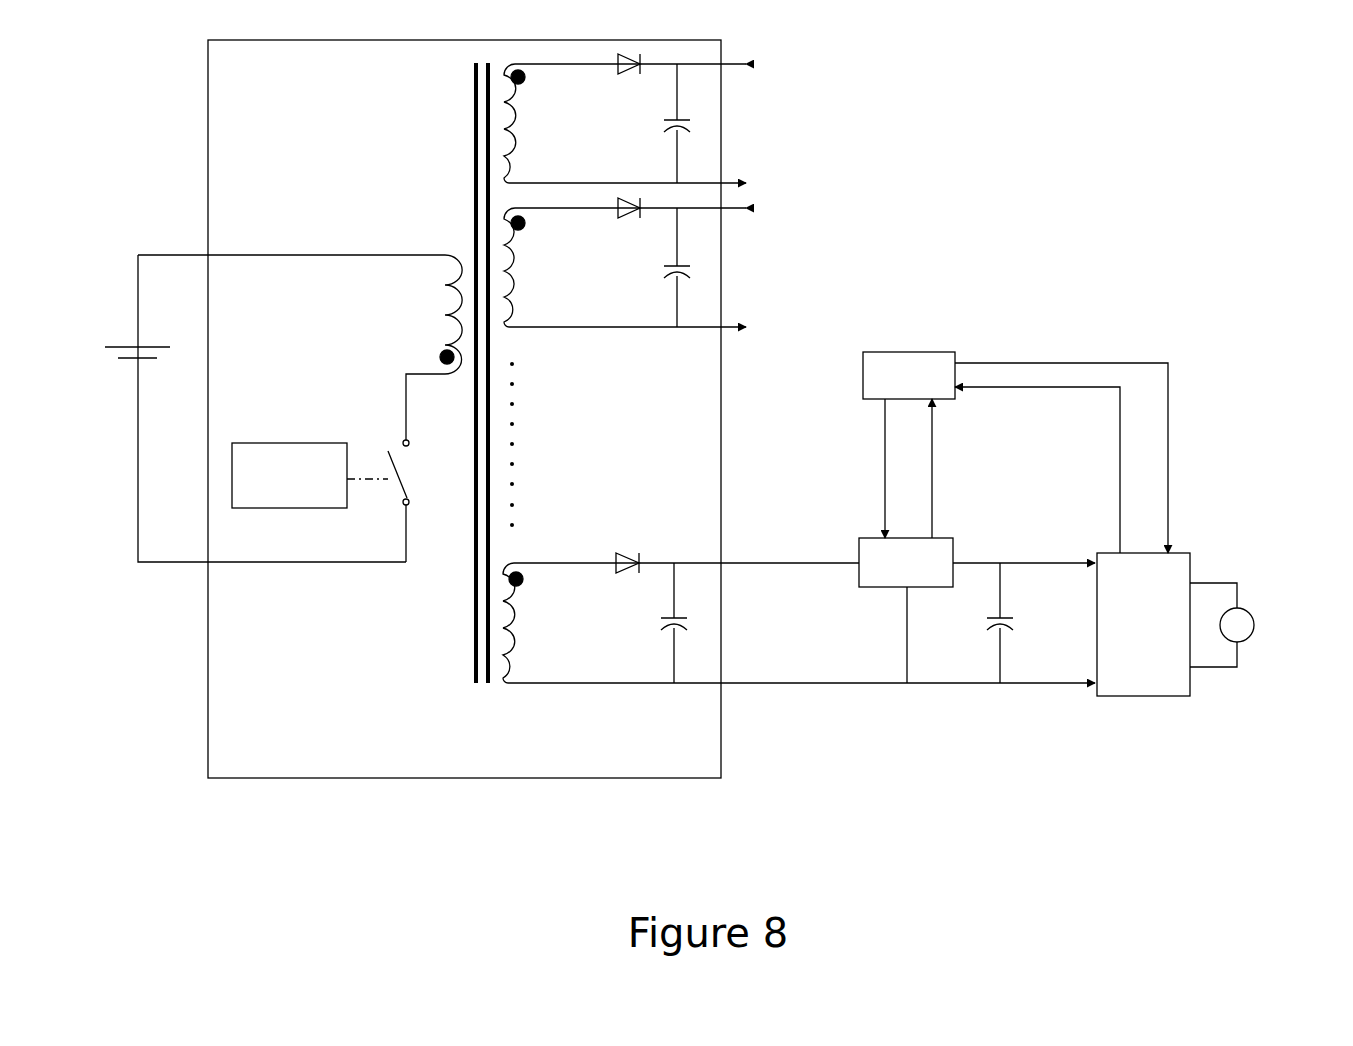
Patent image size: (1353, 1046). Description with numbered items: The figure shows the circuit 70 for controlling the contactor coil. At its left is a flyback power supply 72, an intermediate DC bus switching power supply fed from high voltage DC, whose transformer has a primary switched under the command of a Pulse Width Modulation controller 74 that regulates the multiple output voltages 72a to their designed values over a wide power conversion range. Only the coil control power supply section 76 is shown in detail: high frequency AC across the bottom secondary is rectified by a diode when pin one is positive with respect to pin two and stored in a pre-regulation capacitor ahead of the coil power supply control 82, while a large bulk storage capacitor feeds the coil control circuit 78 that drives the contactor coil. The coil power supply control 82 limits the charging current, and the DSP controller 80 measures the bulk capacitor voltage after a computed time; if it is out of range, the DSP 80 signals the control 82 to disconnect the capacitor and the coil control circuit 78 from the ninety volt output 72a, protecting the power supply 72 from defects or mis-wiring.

The circuit for controlling the contactor coil 70 is at (1040, 115).
The flyback power supply 72 is at (352, 145).
The output voltage 72a is at (705, 88).
The Pulse Width Modulation controller 74 is at (272, 443).
The coil control power supply section 76 is at (823, 449).
The coil control circuit 78 is at (1140, 697).
The DSP controller 80 is at (925, 352).
The coil power supply control 82 is at (953, 552).